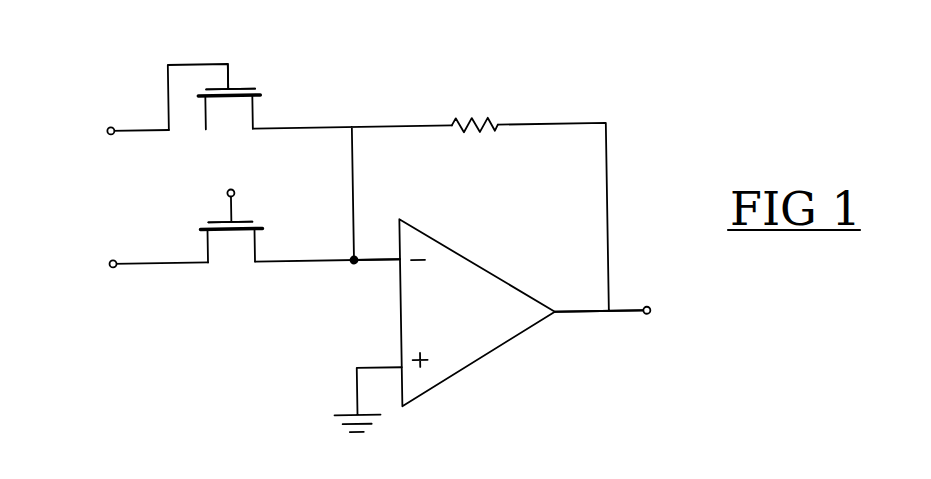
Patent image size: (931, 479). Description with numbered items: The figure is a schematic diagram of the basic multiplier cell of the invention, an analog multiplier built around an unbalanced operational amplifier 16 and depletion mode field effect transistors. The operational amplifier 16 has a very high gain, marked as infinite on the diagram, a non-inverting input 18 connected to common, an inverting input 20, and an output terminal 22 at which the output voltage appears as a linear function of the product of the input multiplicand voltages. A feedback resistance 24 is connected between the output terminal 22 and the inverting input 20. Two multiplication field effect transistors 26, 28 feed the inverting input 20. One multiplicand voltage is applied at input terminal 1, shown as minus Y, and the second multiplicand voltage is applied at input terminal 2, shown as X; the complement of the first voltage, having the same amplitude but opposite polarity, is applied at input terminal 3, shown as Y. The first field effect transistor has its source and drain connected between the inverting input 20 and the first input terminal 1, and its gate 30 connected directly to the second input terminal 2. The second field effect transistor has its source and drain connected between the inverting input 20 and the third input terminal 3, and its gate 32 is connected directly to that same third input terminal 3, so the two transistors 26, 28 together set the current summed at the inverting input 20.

The input terminal 1 is at (113, 264).
The input terminal 2 is at (232, 187).
The input terminal 3 is at (113, 123).
The operational amplifier 16 is at (480, 362).
The non-inverting input 18 is at (376, 368).
The inverting input 20 is at (397, 259).
The output terminal 22 is at (577, 317).
The feedback resistance 24 is at (494, 123).
The field effect transistor 26 is at (246, 86).
The field effect transistor 28 is at (240, 229).
The gate 30 is at (232, 208).
The gate 32 is at (233, 85).